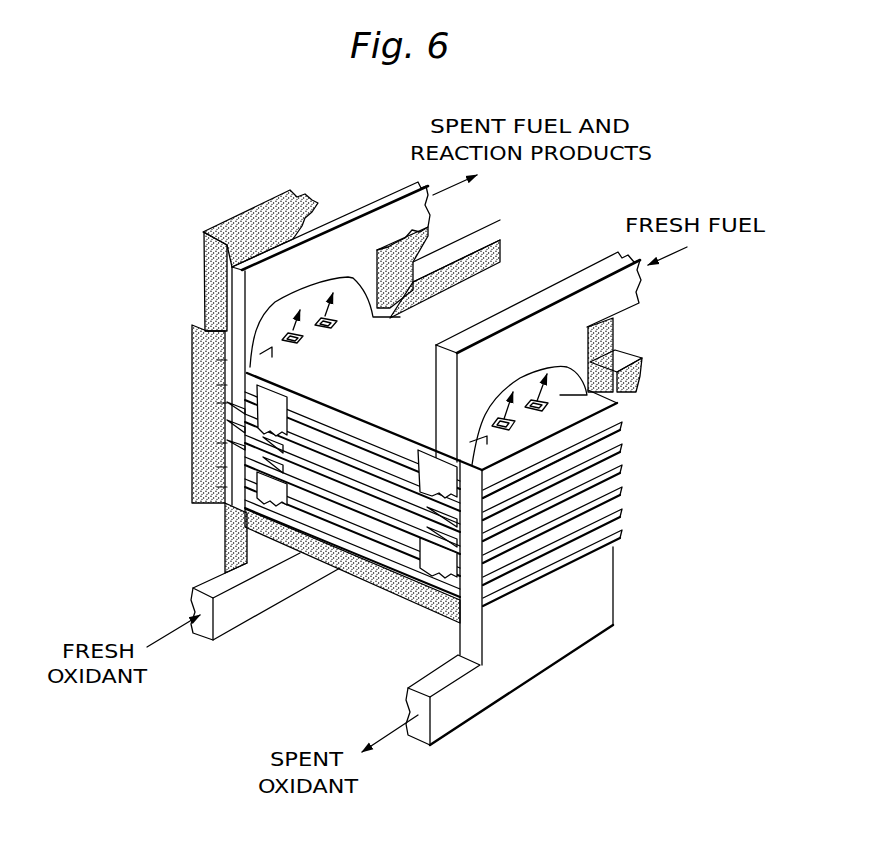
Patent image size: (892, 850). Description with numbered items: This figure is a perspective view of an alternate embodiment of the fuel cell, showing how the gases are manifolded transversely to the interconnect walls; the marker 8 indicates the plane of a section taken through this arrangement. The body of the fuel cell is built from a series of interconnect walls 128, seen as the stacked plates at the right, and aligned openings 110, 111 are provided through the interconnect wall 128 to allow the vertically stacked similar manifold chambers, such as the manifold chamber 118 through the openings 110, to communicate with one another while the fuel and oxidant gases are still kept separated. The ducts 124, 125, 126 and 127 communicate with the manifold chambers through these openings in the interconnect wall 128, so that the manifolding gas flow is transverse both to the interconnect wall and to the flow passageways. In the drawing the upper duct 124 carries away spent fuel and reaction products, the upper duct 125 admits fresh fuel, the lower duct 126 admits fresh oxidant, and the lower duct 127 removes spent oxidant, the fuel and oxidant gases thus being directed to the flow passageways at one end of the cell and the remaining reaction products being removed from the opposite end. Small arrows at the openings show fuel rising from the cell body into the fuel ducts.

The section line for FIG. 8 is at (157, 338).
The opening 110 is at (422, 302).
The opening 111 is at (602, 400).
The manifold chamber 118 is at (227, 422).
The duct 124 is at (372, 195).
The duct 125 is at (563, 277).
The duct 126 is at (208, 577).
The duct 127 is at (505, 697).
The interconnect wall 128 is at (620, 466).